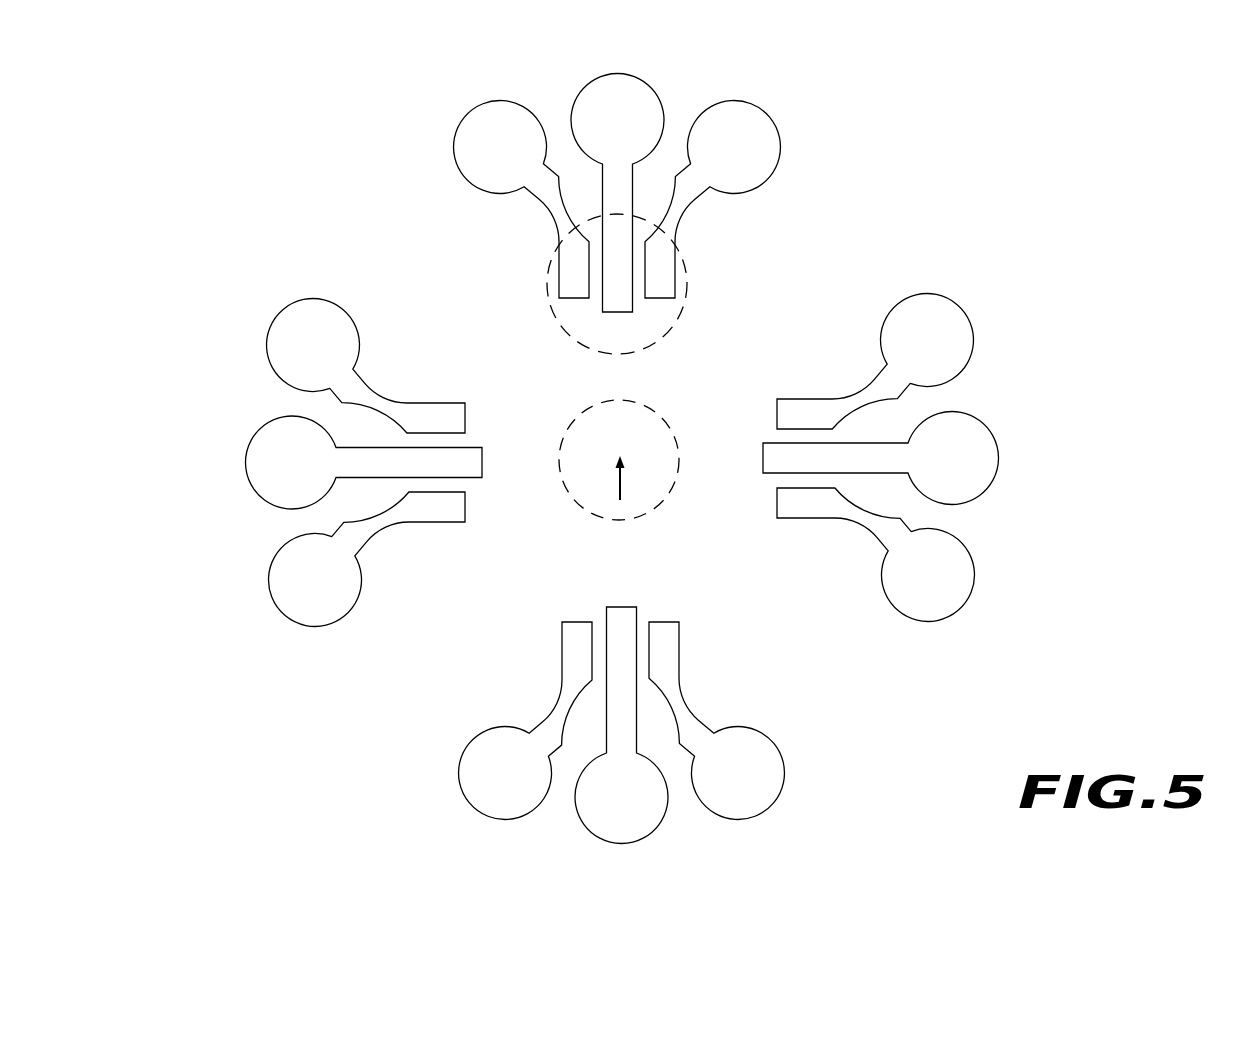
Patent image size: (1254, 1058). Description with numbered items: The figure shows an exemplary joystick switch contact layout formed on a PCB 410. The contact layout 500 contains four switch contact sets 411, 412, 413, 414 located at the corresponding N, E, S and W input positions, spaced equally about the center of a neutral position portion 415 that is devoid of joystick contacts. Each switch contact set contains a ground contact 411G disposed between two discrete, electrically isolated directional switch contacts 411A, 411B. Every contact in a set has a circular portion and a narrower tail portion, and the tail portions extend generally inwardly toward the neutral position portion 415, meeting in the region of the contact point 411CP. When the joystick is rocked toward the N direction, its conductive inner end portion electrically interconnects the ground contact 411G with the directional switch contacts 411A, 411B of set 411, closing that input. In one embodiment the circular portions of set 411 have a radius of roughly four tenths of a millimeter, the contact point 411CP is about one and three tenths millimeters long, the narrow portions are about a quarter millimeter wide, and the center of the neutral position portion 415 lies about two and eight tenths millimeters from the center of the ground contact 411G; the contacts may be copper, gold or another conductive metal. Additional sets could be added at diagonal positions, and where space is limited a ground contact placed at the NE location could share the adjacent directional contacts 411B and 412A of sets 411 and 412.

The PCB 410 is at (371, 718).
The switch contact set 411 is at (675, 58).
The directional switch contact 411A is at (470, 111).
The directional switch contact 411B is at (764, 111).
The ground contact 411G is at (598, 80).
The contact point 411CP is at (690, 288).
The switch contact set 412 is at (997, 521).
The directional switch contact 412A is at (973, 336).
The switch contact set 413 is at (538, 843).
The switch contact set 414 is at (249, 548).
The neutral position portion 415 is at (640, 517).
The contact layout 500 is at (1072, 723).